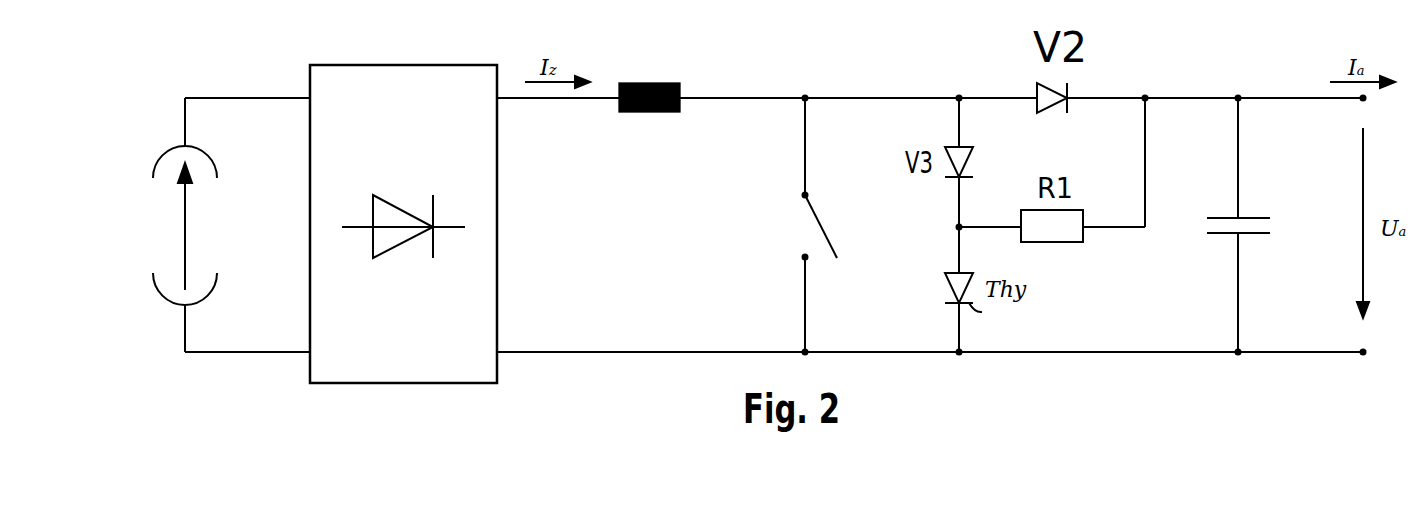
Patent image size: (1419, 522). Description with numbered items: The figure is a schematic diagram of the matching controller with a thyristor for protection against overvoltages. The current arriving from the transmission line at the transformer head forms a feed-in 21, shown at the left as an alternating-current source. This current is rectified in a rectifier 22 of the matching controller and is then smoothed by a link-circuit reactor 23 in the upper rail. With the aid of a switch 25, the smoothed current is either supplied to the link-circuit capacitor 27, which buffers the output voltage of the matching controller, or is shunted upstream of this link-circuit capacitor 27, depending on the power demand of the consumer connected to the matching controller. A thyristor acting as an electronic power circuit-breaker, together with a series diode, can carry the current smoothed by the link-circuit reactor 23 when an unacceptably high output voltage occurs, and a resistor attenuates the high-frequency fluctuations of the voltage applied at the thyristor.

The feed-in 21 is at (147, 225).
The rectifier 22 is at (440, 353).
The link-circuit reactor 23 is at (649, 105).
The switch 25 is at (796, 225).
The link-circuit capacitor 27 is at (1249, 225).